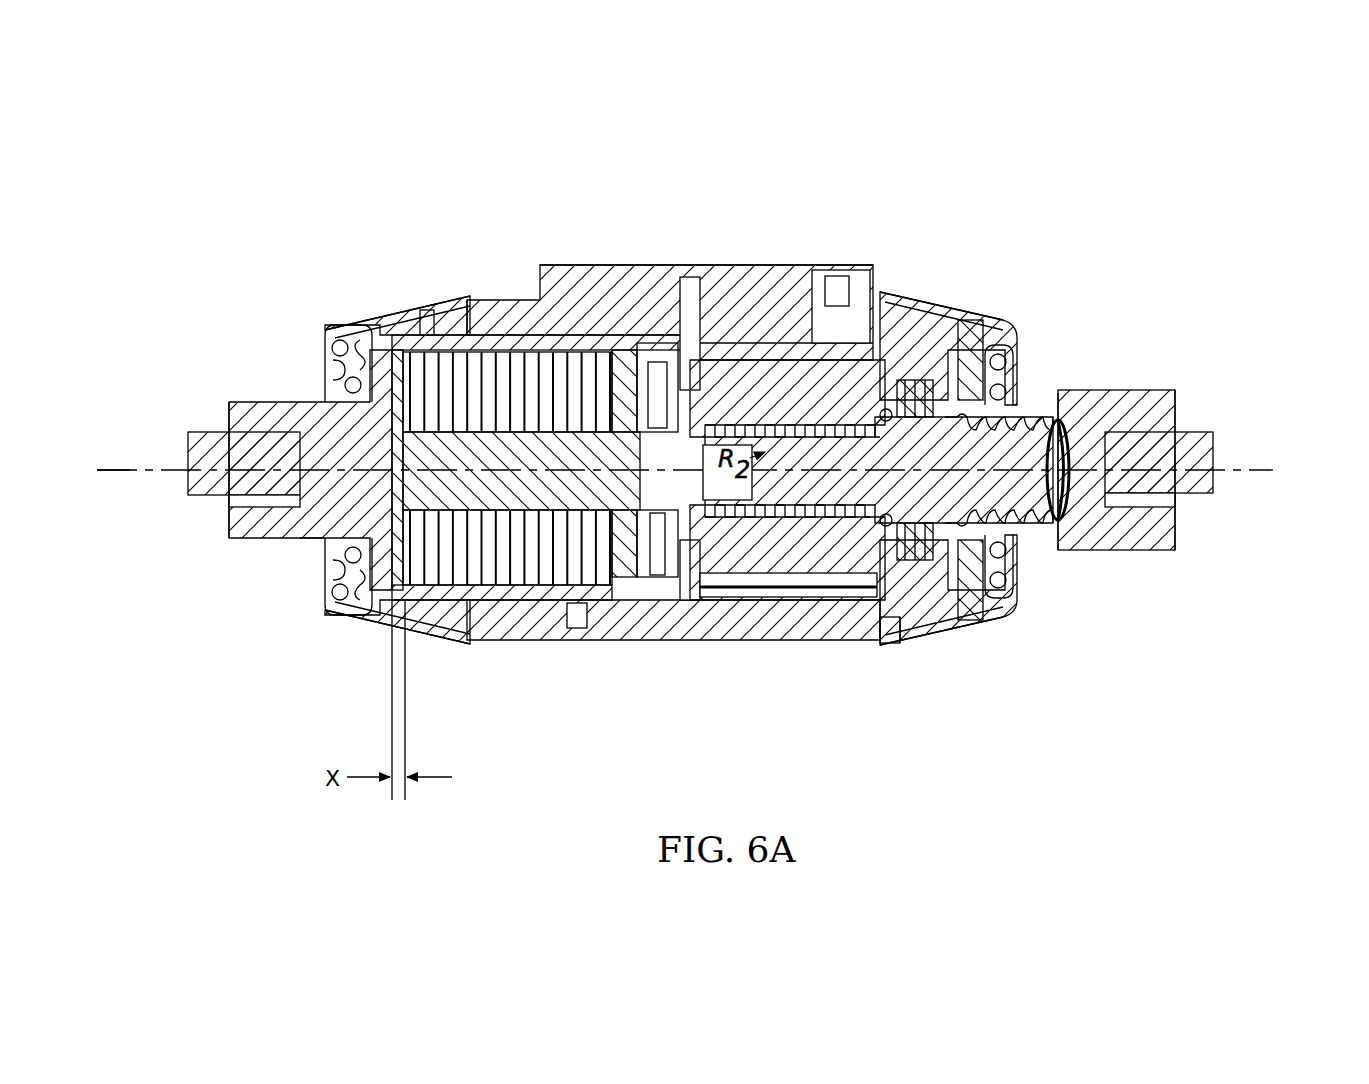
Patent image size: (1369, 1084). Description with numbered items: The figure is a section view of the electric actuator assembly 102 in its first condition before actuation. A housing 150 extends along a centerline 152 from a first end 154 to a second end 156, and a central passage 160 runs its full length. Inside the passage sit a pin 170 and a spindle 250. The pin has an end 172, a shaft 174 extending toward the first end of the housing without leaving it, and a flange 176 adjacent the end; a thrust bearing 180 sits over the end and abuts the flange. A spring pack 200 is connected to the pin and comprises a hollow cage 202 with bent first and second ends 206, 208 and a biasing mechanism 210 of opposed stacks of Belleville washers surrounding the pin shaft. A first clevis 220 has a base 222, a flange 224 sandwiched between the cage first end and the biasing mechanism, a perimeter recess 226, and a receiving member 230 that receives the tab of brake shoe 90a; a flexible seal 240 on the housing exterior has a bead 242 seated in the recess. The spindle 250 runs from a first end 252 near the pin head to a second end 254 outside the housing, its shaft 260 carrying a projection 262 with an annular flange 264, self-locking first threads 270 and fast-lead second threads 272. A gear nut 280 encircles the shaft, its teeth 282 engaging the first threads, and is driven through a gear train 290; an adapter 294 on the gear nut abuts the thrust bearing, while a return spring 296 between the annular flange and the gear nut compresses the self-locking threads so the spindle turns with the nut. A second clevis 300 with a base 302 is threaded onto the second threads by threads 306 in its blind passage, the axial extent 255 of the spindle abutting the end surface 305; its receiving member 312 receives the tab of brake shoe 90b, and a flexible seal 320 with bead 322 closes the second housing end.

The electric actuator assembly 102 is at (912, 248).
The housing 150 is at (500, 318).
The centerline 152 is at (1262, 470).
The first end 154 is at (942, 280).
The second end 156 is at (426, 296).
The central passage 160 is at (753, 603).
The pin 170 is at (548, 512).
The end 172 is at (673, 512).
The shaft 174 is at (460, 617).
The flange 176 is at (652, 540).
The thrust bearing 180 is at (652, 600).
The spring pack 200 is at (521, 338).
The cage 202 is at (568, 345).
The first end 206 is at (638, 338).
The second end 208 is at (362, 603).
The biasing mechanism 210 is at (540, 565).
The first clevis 220 is at (264, 395).
The base 222 is at (332, 335).
The flange 224 is at (390, 330).
The recess 226 is at (338, 524).
The receiving member 230 is at (233, 528).
The flexible seal 240 is at (397, 630).
The bead 242 is at (327, 565).
The spindle 250 is at (830, 330).
The first end 252 is at (682, 330).
The second end 254 is at (1050, 500).
The axial extent 255 is at (1053, 510).
The shaft 260 is at (800, 620).
The projection 262 is at (847, 620).
The annular flange 264 is at (905, 620).
The first threads 270 is at (845, 425).
The second threads 272 is at (1010, 415).
The gear nut 280 is at (738, 360).
The teeth 282 is at (775, 455).
The gear train 290 is at (712, 420).
The adapter 294 is at (713, 620).
The return spring 296 is at (942, 335).
The second clevis 300 is at (1172, 388).
The base 302 is at (1085, 448).
The end surface 305 is at (1061, 470).
The threads 306 is at (968, 620).
The receiving member 312 is at (1162, 530).
The flexible seal 320 is at (968, 607).
The bead 322 is at (975, 530).
The brake shoe 90a is at (190, 486).
The brake shoe 90b is at (1213, 495).